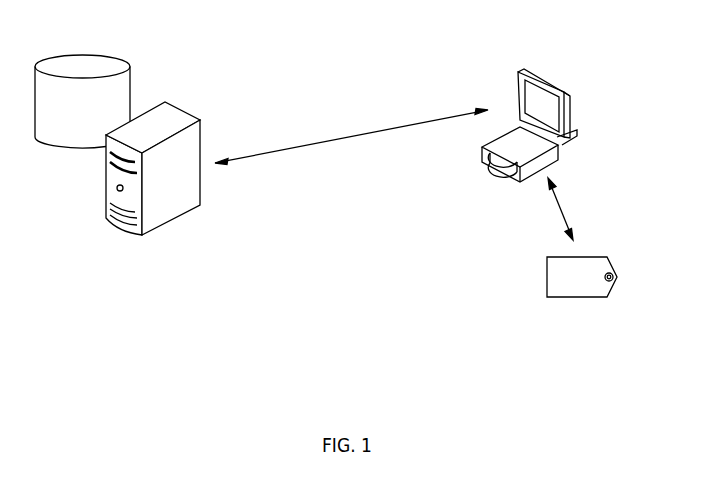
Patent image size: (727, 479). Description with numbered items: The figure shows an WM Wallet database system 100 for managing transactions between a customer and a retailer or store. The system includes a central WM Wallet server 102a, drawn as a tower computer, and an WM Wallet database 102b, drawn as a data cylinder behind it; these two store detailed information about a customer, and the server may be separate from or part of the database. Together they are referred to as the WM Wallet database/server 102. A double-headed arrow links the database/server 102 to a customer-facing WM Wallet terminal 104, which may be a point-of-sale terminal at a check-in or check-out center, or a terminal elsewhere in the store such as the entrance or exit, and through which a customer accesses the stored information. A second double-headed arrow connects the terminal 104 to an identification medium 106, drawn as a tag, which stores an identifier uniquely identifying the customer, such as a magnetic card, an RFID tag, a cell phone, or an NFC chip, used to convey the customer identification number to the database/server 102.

The WM Wallet database system 100 is at (363, 384).
The WM Wallet database/server 102 is at (73, 192).
The central WM Wallet server 102a is at (220, 108).
The WM Wallet database 102b is at (117, 46).
The customer-facing WM Wallet terminal 104 is at (627, 118).
The identification medium 106 is at (665, 286).